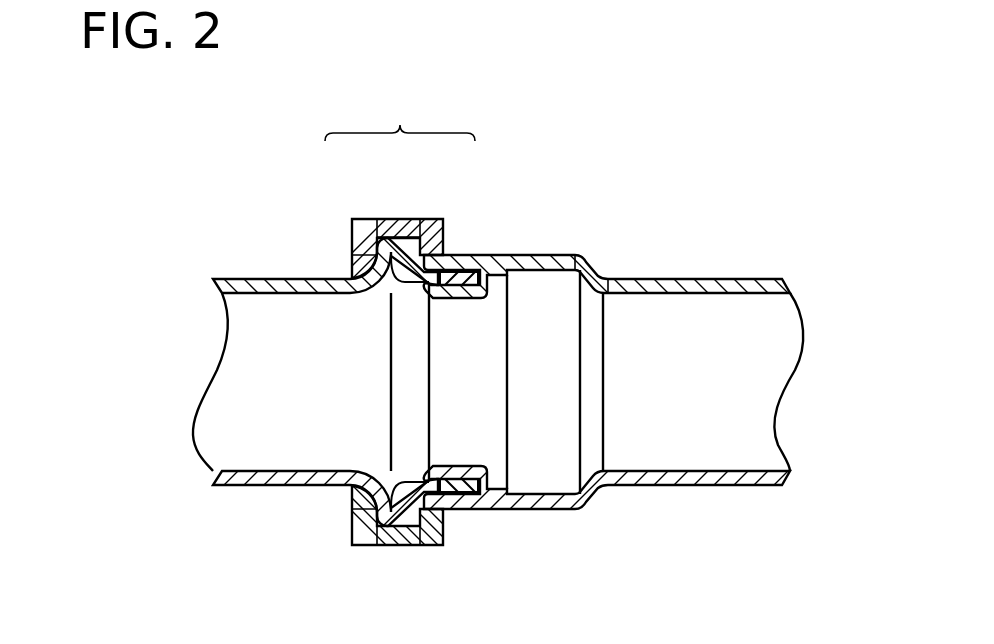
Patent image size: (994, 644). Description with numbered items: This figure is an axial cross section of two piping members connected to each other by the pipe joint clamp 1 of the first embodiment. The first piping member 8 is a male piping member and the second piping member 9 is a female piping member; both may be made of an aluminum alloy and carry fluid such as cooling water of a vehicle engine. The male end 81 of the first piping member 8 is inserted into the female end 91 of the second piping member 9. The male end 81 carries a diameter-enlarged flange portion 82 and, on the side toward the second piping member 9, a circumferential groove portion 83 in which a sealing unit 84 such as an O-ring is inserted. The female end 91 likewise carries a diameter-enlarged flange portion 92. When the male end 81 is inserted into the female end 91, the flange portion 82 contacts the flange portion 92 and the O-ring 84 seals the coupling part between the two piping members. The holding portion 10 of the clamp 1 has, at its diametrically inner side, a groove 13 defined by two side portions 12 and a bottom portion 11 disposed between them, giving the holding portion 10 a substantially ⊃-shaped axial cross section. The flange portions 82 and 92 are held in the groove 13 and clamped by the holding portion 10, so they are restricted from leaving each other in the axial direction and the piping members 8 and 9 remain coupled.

The pipe joint clamp 1 is at (453, 232).
The first piping member 8 is at (250, 277).
The second piping member 9 is at (732, 276).
The holding portion 10 is at (400, 115).
The bottom portion 11 is at (397, 232).
The side portions 12 is at (364, 245).
The groove 13 is at (351, 272).
The male end 81 is at (518, 480).
The diameter-enlarged flange portion 82 is at (386, 540).
The groove portion 83 is at (485, 500).
The sealing unit 84 is at (468, 494).
The female end 91 is at (392, 542).
The diameter-enlarged flange portion 92 is at (413, 542).